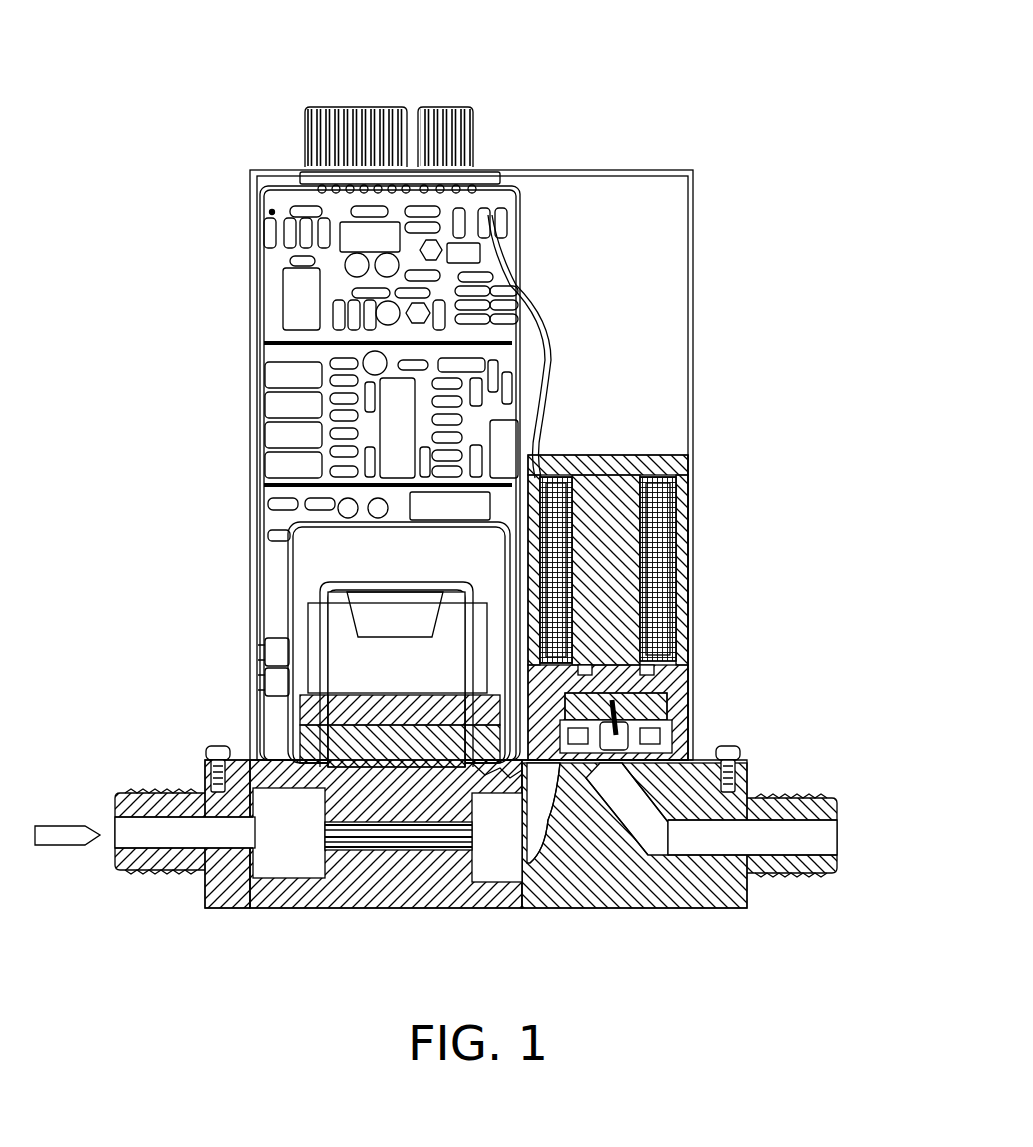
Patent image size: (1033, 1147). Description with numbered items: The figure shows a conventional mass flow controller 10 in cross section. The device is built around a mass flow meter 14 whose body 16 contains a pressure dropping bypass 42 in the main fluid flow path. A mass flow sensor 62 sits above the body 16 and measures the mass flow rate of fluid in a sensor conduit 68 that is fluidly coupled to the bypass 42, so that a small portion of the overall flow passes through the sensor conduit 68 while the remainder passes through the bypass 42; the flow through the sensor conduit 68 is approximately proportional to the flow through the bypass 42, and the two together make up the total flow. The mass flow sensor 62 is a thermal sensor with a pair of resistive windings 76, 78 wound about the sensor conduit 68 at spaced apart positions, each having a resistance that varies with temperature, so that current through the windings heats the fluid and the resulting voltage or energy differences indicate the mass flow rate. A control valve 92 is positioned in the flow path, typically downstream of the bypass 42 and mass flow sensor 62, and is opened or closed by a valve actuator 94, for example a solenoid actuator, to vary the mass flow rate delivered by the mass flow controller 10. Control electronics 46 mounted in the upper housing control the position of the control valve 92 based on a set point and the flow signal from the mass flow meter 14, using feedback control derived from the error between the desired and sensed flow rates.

The mass flow controller 10 is at (697, 37).
The mass flow meter 14 is at (218, 685).
The body 16 is at (437, 897).
The pressure dropping bypass 42 is at (388, 843).
The control electronics 46 is at (275, 277).
The mass flow sensor 62 is at (297, 602).
The sensor conduit 68 is at (332, 685).
The resistive winding 76 is at (375, 582).
The resistive winding 78 is at (425, 582).
The control valve 92 is at (672, 452).
The valve actuator 94 is at (687, 510).